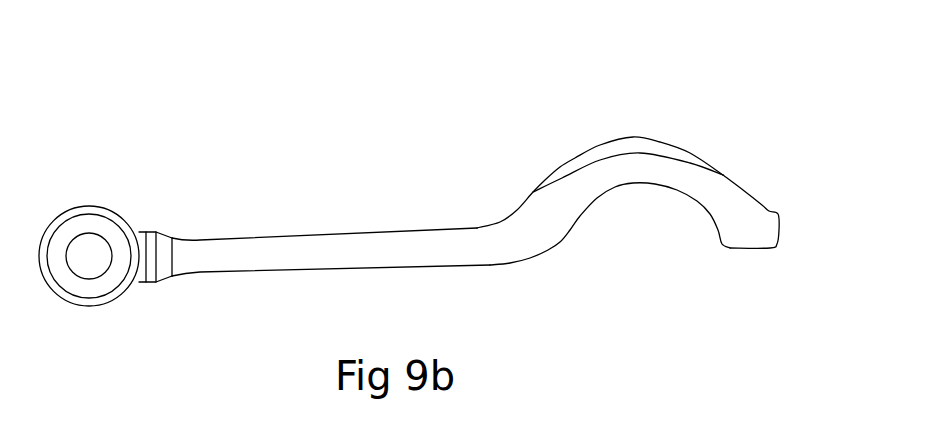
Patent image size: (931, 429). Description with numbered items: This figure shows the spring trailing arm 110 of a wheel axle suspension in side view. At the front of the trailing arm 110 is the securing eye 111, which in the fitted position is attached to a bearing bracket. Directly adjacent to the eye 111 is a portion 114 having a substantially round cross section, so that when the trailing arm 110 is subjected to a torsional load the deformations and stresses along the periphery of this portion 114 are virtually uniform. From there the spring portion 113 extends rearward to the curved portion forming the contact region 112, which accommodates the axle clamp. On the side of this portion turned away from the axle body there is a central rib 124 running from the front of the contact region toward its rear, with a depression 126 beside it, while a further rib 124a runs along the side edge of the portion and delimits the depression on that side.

The spring trailing arm 110 is at (287, 127).
The securing eye 111 is at (80, 284).
The contact region 112 is at (585, 218).
The spring portion 113 is at (337, 230).
The portion adjacent to the eye 114 is at (157, 222).
The central rib 124 is at (612, 147).
The further rib 124a is at (637, 170).
The depression 126 is at (655, 153).